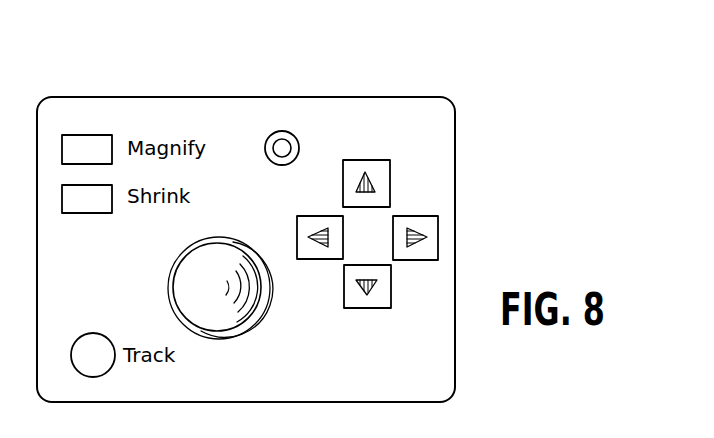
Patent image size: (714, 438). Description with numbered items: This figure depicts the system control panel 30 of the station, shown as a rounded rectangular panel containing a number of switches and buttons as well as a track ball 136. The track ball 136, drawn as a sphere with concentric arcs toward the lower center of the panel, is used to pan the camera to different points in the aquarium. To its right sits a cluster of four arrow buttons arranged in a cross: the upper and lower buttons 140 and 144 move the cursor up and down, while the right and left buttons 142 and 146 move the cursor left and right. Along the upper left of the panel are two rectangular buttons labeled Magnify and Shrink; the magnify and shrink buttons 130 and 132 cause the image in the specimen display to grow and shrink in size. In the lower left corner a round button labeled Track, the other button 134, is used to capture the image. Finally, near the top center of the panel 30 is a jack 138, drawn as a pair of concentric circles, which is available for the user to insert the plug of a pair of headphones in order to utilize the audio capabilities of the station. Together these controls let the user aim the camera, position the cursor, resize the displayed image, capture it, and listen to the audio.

The control panel 30 is at (368, 68).
The magnify button 130 is at (92, 140).
The shrink button 132 is at (90, 205).
The button 134 is at (95, 342).
The track ball 136 is at (238, 325).
The jack 138 is at (292, 140).
The button 140 is at (367, 160).
The button 142 is at (438, 243).
The button 144 is at (373, 308).
The button 146 is at (310, 259).